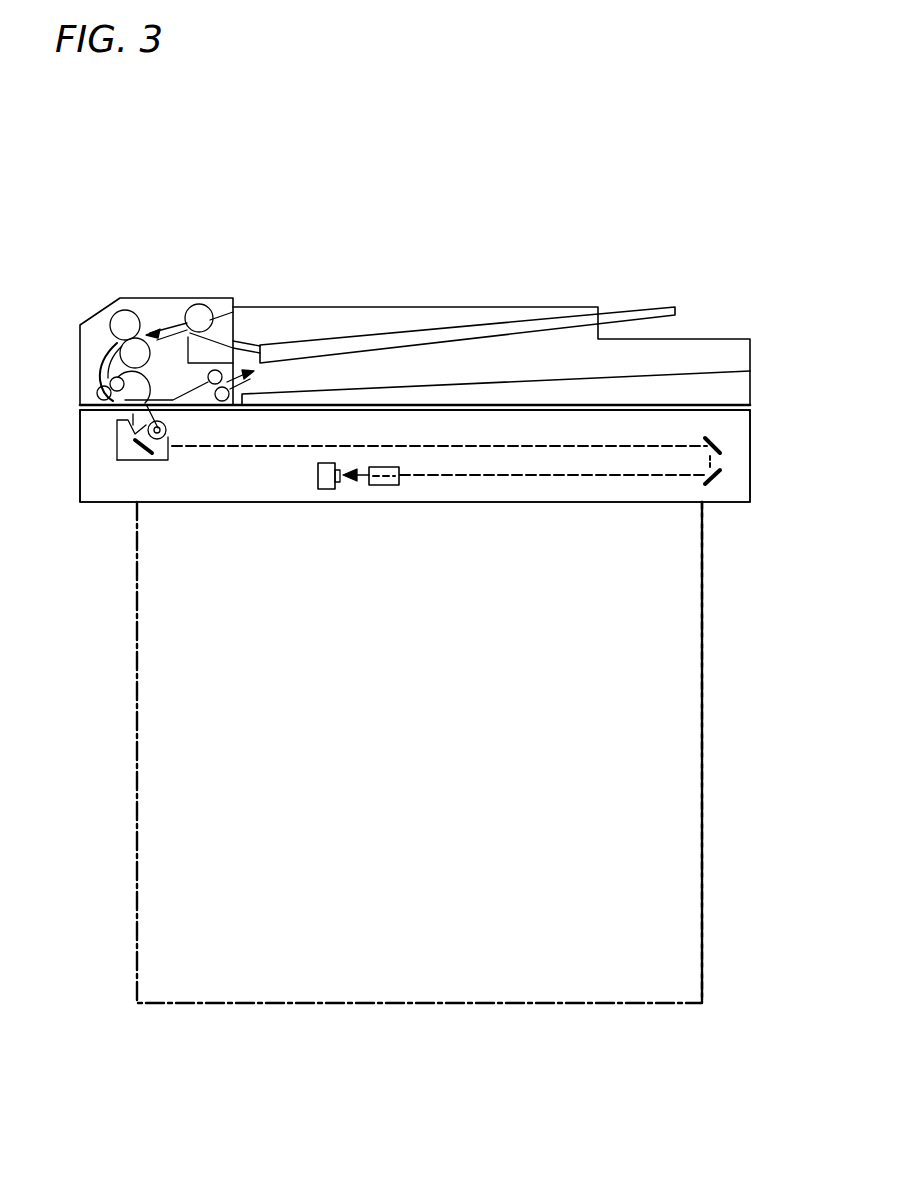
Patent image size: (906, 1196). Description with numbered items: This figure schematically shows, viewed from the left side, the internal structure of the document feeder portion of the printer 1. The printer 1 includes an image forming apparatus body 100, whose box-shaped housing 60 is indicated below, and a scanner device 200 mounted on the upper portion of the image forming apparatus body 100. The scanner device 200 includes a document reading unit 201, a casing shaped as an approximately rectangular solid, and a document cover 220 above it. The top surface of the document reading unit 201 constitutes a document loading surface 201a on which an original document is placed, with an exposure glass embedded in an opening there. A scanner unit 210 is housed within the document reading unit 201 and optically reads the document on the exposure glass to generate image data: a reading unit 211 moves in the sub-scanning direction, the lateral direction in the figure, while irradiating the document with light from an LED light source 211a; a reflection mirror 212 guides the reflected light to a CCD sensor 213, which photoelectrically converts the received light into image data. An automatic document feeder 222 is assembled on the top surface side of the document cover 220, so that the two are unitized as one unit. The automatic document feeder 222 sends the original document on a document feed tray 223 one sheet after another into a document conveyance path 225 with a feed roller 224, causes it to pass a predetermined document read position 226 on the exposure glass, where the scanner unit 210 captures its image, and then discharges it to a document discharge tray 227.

The printer 1 is at (70, 240).
The housing 60 is at (703, 612).
The image forming apparatus body 100 is at (703, 590).
The scanner device 200 is at (152, 290).
The document reading unit 201 is at (750, 450).
The document loading surface 201a is at (666, 406).
The scanner unit 210 is at (97, 475).
The reading unit 211 is at (150, 460).
The LED light source 211a is at (167, 436).
The reflection mirror 212 is at (720, 477).
The CCD sensor 213 is at (318, 476).
The document cover 220 is at (750, 376).
The automatic document feeder 222 is at (192, 297).
The document feed tray 223 is at (320, 341).
The feed roller 224 is at (213, 304).
The document conveyance path 225 is at (100, 360).
The document read position 226 is at (100, 375).
The document discharge tray 227 is at (490, 384).